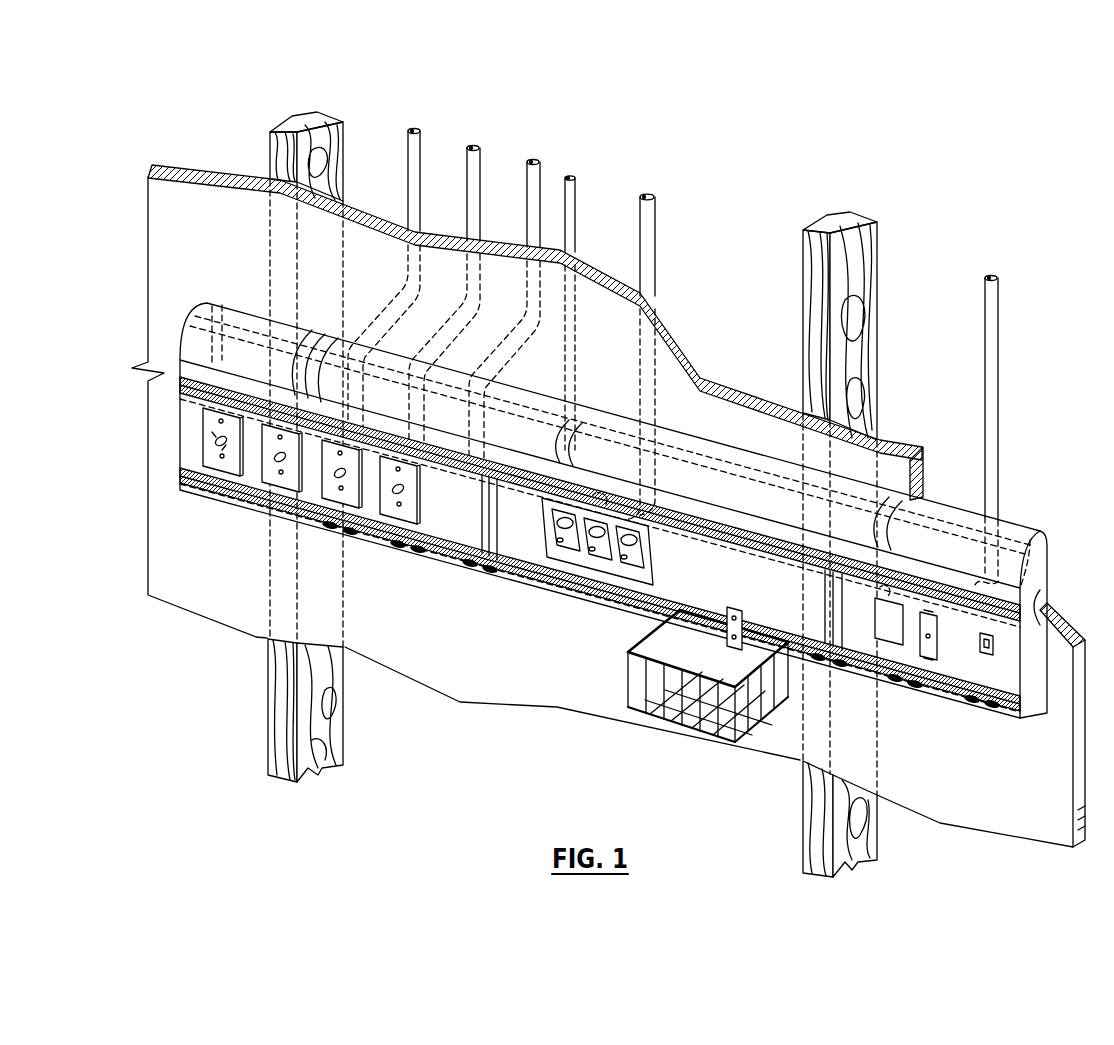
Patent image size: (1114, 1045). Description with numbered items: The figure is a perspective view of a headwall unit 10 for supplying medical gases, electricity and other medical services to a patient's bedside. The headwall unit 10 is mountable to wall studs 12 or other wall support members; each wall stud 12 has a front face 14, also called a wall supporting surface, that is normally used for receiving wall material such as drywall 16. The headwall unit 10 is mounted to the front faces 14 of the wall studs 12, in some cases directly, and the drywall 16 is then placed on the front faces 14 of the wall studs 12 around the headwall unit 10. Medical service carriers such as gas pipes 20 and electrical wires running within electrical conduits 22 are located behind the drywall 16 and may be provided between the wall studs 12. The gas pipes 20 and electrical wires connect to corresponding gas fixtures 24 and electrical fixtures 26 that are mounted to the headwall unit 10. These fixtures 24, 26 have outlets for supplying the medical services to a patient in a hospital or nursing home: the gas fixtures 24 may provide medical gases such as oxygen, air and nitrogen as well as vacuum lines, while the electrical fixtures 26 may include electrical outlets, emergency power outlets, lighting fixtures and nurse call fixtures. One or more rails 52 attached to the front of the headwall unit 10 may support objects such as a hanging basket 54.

The headwall unit 10 is at (1032, 508).
The wall stud 12 is at (337, 153).
The front face 14 is at (278, 153).
The drywall 16 is at (168, 208).
The gas pipe 20 is at (420, 153).
The electrical conduit 22 is at (575, 197).
The gas fixture 24 is at (222, 458).
The electrical fixture 26 is at (380, 547).
The rail 52 is at (676, 604).
The hanging basket 54 is at (626, 672).